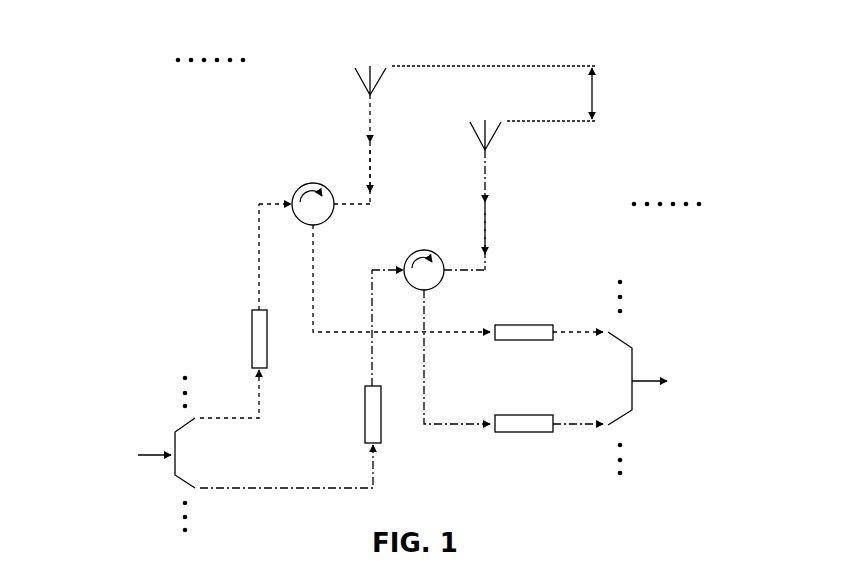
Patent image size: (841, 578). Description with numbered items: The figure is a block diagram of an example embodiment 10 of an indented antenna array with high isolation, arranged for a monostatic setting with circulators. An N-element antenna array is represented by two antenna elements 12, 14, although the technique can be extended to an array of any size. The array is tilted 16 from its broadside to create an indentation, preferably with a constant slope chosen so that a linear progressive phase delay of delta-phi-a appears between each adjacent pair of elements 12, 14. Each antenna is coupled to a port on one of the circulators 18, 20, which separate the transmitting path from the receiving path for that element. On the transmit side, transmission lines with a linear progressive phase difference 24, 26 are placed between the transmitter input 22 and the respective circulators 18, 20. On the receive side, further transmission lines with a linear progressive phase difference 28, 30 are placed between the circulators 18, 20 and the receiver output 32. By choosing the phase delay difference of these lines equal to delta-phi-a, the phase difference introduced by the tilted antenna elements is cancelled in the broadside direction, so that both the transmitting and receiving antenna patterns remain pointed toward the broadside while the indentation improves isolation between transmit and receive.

The embodiment 10 is at (118, 40).
The antenna element 12 is at (362, 79).
The antenna element 14 is at (490, 140).
The tilt 16 is at (617, 87).
The circulator 18 is at (313, 183).
The circulator 20 is at (442, 284).
The transmitter input 22 is at (73, 440).
The transmission line with linear progressive phase difference 24 is at (190, 323).
The transmission line with linear progressive phase difference 26 is at (382, 428).
The transmission line with linear progressive phase difference 28 is at (517, 323).
The transmission line with linear progressive phase difference 30 is at (527, 413).
The receiver output 32 is at (702, 370).